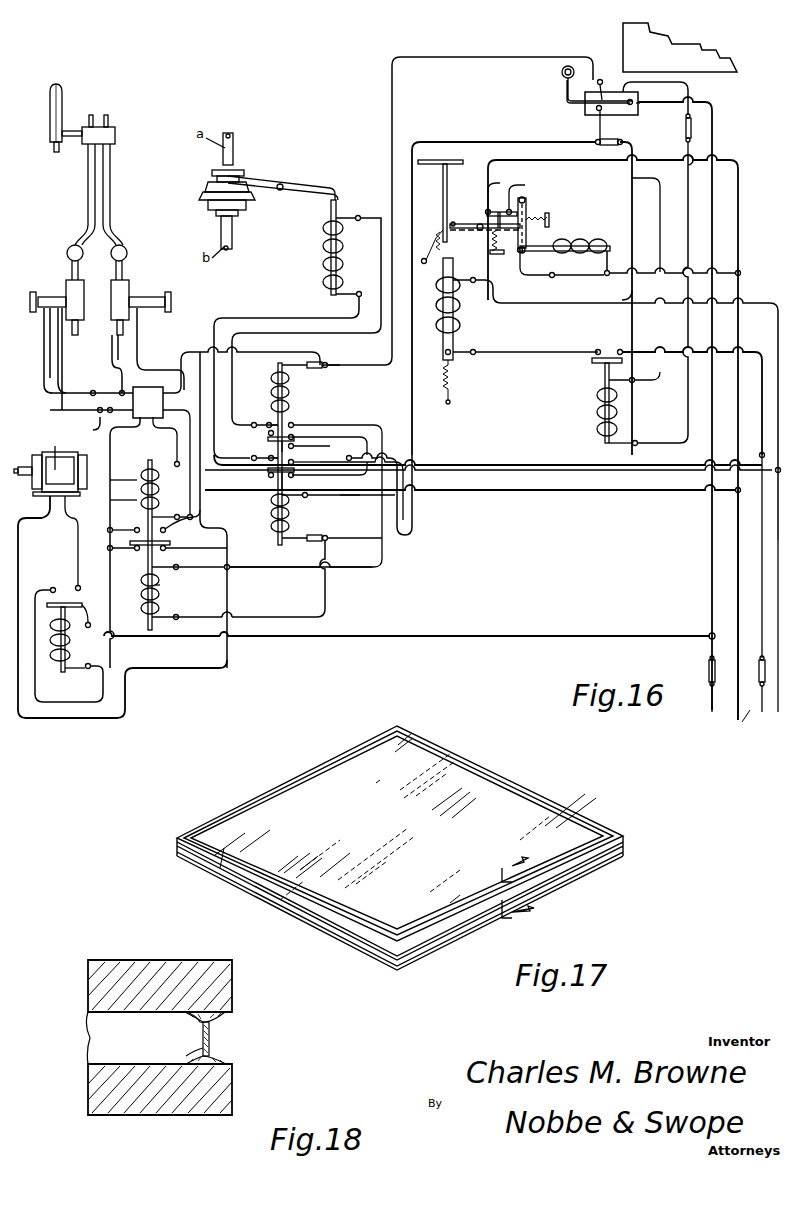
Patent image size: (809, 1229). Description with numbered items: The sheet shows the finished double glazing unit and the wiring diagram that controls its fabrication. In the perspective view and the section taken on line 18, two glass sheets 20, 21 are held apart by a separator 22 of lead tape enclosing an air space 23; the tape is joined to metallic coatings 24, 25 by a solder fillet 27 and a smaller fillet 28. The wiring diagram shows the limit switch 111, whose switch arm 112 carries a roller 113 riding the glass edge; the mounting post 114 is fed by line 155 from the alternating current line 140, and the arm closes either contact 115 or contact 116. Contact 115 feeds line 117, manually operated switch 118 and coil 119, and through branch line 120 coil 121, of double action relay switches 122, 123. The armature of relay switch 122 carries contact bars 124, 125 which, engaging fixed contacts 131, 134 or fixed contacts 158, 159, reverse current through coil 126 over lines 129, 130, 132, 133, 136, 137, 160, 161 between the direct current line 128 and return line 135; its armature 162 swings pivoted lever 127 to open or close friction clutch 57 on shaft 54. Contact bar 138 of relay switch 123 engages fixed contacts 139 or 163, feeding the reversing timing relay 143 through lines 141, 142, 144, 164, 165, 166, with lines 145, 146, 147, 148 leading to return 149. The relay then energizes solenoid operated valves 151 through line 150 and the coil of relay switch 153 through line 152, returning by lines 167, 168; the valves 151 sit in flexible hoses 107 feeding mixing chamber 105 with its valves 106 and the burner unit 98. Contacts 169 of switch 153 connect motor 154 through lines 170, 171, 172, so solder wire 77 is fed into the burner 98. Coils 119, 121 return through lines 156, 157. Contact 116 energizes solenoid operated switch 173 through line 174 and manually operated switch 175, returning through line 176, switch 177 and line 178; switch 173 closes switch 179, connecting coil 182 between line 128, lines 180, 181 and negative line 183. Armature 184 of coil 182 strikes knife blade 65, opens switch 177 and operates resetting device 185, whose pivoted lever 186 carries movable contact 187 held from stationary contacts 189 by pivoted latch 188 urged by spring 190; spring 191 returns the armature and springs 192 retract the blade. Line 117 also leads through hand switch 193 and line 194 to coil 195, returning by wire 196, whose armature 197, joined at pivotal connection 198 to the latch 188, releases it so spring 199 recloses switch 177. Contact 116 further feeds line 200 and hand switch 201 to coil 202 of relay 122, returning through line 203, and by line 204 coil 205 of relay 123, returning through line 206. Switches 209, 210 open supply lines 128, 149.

In FIG. 16, the glass sheet 20 is at (604, 42).
In FIG. 17, the glass sheet 20 is at (372, 966).
In FIG. 18, the glass sheet 20 is at (136, 1134).
In FIG. 17, the glass sheet 21 is at (330, 745).
In FIG. 18, the glass sheet 21 is at (134, 950).
In FIG. 16, the separator 22 is at (445, 160).
In FIG. 17, the separator 22 is at (160, 850).
In FIG. 18, the separator 22 is at (236, 1034).
In FIG. 18, the air space 23 is at (60, 1054).
In FIG. 18, the metallic coating 24 is at (226, 1064).
In FIG. 18, the metallic coating 25 is at (222, 1012).
In FIG. 18, the fillet 27 is at (218, 1022).
In FIG. 18, the second smaller fillet 28 is at (205, 1055).
In FIG. 17, the section line 18 is at (524, 887).
In FIG. 16, the shaft 54 is at (250, 236).
In FIG. 16, the friction clutch 57 is at (210, 200).
In FIG. 16, the knife blade 65 is at (443, 190).
In FIG. 16, the solder wire 77 is at (54, 147).
In FIG. 16, the burner unit 98 is at (56, 105).
In FIG. 16, the mixing chamber 105 is at (115, 134).
In FIG. 16, the valves 106 is at (106, 116).
In FIG. 16, the flexible hoses 107 is at (88, 172).
In FIG. 16, the limit switch 111 is at (657, 110).
In FIG. 16, the switch arm 112 is at (568, 100).
In FIG. 16, the roller 113 is at (562, 72).
In FIG. 16, the mounting post 114 is at (638, 94).
In FIG. 16, the contact 115 is at (603, 112).
In FIG. 16, the contact 116 is at (604, 78).
In FIG. 16, the line 117 is at (468, 140).
In FIG. 16, the manually operated switch 118 is at (315, 537).
In FIG. 16, the coil 119 is at (292, 509).
In FIG. 16, the branch line 120 is at (326, 552).
In FIG. 16, the coil 121 is at (158, 588).
In FIG. 16, the double action relay switch 122 is at (258, 500).
In FIG. 16, the double action relay switch 123 is at (165, 606).
In FIG. 16, the contact bar 124 is at (299, 438).
In FIG. 16, the contact bar 125 is at (317, 472).
In FIG. 16, the coil 126 is at (300, 272).
In FIG. 16, the pivoted lever 127 is at (298, 182).
In FIG. 16, the direct current supply line 128 is at (762, 730).
In FIG. 16, the line 129 is at (492, 460).
In FIG. 16, the line 130 is at (338, 437).
In FIG. 16, the fixed contacts 131 is at (294, 444).
In FIG. 16, the line 132 is at (370, 212).
In FIG. 16, the line 133 is at (300, 316).
In FIG. 16, the fixed contacts 134 is at (298, 470).
In FIG. 16, the return line 135 is at (778, 728).
In FIG. 16, the line 136 is at (340, 473).
In FIG. 16, the line 137 is at (472, 475).
In FIG. 16, the contact bar 138 is at (166, 540).
In FIG. 16, the fixed contacts 139 is at (170, 552).
In FIG. 16, the alternating current supply line 140 is at (708, 712).
In FIG. 16, the line 141 is at (553, 634).
In FIG. 16, the line 142 is at (110, 602).
In FIG. 16, the reversing timing relay 143 is at (150, 387).
In FIG. 16, the line 144 is at (203, 482).
In FIG. 16, the line 145 is at (150, 460).
In FIG. 16, the line 146 is at (228, 534).
In FIG. 16, the line 147 is at (285, 572).
In FIG. 16, the line 148 is at (516, 492).
In FIG. 16, the return line 149 is at (740, 290).
In FIG. 16, the line 150 is at (66, 344).
In FIG. 16, the solenoid operated valves 151 is at (52, 300).
In FIG. 16, the line 152 is at (112, 444).
In FIG. 16, the relay switch 153 is at (72, 646).
In FIG. 16, the motor 154 is at (50, 460).
In FIG. 16, the line 155 is at (713, 135).
In FIG. 16, the line 156 is at (338, 494).
In FIG. 16, the line 157 is at (200, 570).
In FIG. 16, the fixed contacts 158 is at (268, 456).
In FIG. 16, the fixed contacts 159 is at (268, 422).
In FIG. 16, the line 160 is at (367, 489).
In FIG. 16, the line 161 is at (345, 430).
In FIG. 16, the armature 162 is at (331, 212).
In FIG. 16, the fixed contacts 163 is at (122, 516).
In FIG. 16, the line 164 is at (123, 493).
In FIG. 16, the line 165 is at (190, 393).
In FIG. 16, the line 166 is at (137, 478).
In FIG. 16, the line 167 is at (44, 352).
In FIG. 16, the line 168 is at (98, 422).
In FIG. 16, the contacts 169 is at (63, 586).
In FIG. 16, the line 170 is at (112, 650).
In FIG. 16, the line 171 is at (76, 577).
In FIG. 16, the line 172 is at (18, 545).
In FIG. 16, the solenoid operated switch 173 is at (603, 376).
In FIG. 16, the line 174 is at (642, 82).
In FIG. 16, the manually operated switch 175 is at (685, 132).
In FIG. 16, the line 176 is at (532, 190).
In FIG. 16, the switch 177 is at (497, 178).
In FIG. 16, the line 178 is at (518, 166).
In FIG. 16, the switch 179 is at (612, 342).
In FIG. 16, the line 180 is at (752, 350).
In FIG. 16, the line 181 is at (562, 352).
In FIG. 16, the coil 182 is at (460, 320).
In FIG. 16, the negative line 183 is at (553, 303).
In FIG. 16, the armature 184 is at (453, 270).
In FIG. 16, the resetting device 185 is at (558, 196).
In FIG. 16, the pivoted lever 186 is at (482, 222).
In FIG. 16, the movable contact 187 is at (485, 228).
In FIG. 16, the pivoted latch 188 is at (160, 463).
In FIG. 16, the stationary contacts 189 is at (486, 208).
In FIG. 16, the spring 190 is at (550, 220).
In FIG. 16, the spring 191 is at (452, 383).
In FIG. 16, the springs 192 is at (436, 240).
In FIG. 16, the hand switch 193 is at (614, 145).
In FIG. 16, the line 194 is at (632, 178).
In FIG. 16, the coil 195 is at (585, 238).
In FIG. 16, the wire 196 is at (614, 270).
In FIG. 16, the armature 197 is at (545, 278).
In FIG. 16, the pivotal connection 198 is at (530, 267).
In FIG. 16, the spring 199 is at (488, 252).
In FIG. 16, the line 200 is at (372, 343).
In FIG. 16, the hand switch 201 is at (330, 368).
In FIG. 16, the coil 202 is at (290, 392).
In FIG. 16, the line 203 is at (383, 422).
In FIG. 16, the line 204 is at (256, 345).
In FIG. 16, the coil 205 is at (162, 500).
In FIG. 16, the line 206 is at (178, 465).
In FIG. 16, the switch 209 is at (708, 670).
In FIG. 16, the switch 210 is at (758, 672).